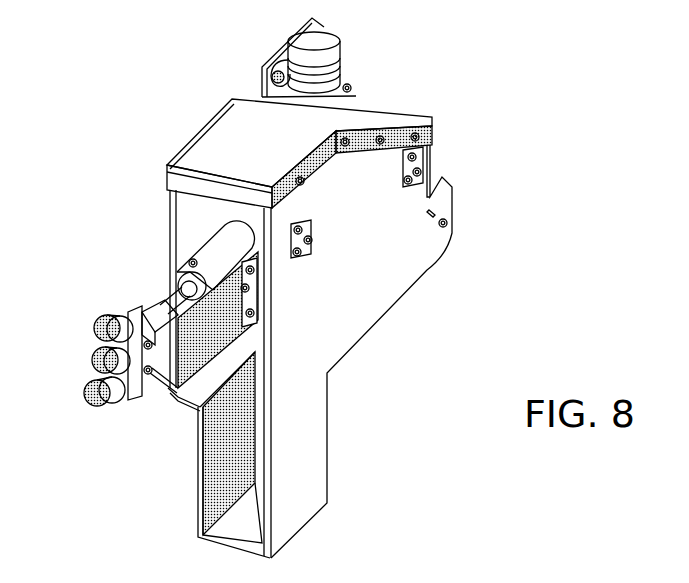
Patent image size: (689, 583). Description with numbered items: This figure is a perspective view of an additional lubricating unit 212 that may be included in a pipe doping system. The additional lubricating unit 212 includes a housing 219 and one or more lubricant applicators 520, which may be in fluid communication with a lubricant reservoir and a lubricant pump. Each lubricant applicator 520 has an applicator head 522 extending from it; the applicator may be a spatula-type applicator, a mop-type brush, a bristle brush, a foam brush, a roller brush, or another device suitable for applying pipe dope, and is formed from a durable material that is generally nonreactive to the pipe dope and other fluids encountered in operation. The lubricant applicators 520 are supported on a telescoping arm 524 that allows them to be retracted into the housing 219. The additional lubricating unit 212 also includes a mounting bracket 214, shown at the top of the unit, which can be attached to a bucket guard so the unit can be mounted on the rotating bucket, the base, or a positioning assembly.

The additional lubricating unit 212 is at (113, 461).
The mounting bracket 214 is at (280, 64).
The housing 219 is at (341, 307).
The lubricant applicator 520 is at (133, 322).
The applicator head 522 is at (92, 372).
The telescoping arm 524 is at (217, 258).